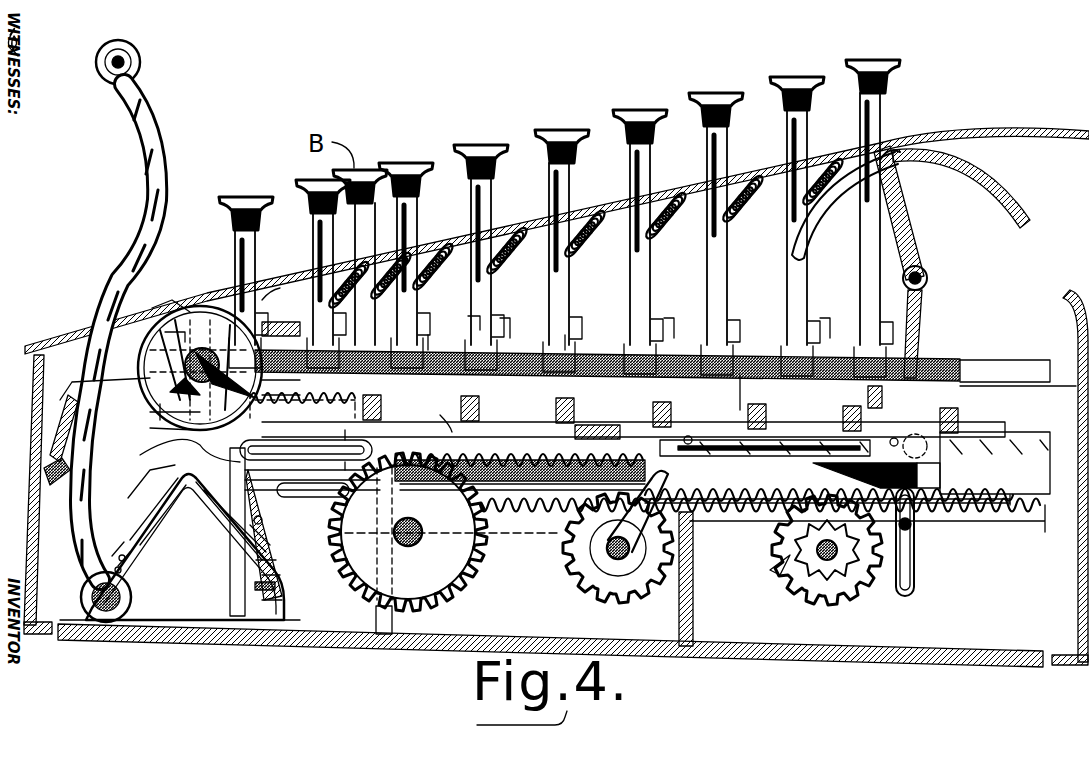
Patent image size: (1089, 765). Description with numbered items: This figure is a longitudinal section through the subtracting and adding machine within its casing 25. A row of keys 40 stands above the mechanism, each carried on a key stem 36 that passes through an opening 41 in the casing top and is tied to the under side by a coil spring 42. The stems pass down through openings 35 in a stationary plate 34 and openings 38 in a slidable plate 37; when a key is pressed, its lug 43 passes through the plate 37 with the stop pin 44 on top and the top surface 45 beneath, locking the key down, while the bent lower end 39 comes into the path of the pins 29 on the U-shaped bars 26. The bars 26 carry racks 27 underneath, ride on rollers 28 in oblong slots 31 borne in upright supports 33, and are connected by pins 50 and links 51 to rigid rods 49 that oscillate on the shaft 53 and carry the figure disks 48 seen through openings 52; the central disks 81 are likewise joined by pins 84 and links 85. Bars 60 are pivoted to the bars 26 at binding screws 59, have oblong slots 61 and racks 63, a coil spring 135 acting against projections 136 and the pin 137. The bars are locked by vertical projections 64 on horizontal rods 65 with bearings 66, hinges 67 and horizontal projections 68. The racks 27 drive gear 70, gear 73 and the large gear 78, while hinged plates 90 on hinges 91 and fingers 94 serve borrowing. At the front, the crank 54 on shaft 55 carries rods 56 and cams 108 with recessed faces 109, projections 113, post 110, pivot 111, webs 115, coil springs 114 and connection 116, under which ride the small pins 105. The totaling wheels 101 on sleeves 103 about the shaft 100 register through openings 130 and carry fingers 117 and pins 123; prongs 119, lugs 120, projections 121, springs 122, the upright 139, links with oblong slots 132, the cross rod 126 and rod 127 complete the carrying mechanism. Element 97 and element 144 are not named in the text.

The casing 25 is at (55, 342).
The bars 26 is at (518, 425).
The racks 27 is at (495, 520).
The rollers 28 is at (700, 436).
The pins 29 is at (472, 398).
The oblong slots 31 is at (310, 492).
The upright supports 33 is at (395, 626).
The stationary plate 34 is at (1042, 372).
The openings 35 is at (548, 358).
The key stems 36 is at (470, 282).
The plate 37 is at (928, 368).
The openings 38 is at (700, 352).
The lower ends 39 is at (400, 372).
The keys 40 is at (318, 180).
The openings 41 is at (328, 262).
The coil springs 42 is at (428, 278).
The lugs 43 is at (430, 342).
The stop pins 44 is at (468, 320).
The top surface 45 is at (492, 330).
The disks 48 is at (816, 240).
The rigid rods 49 is at (922, 264).
The pins 50 is at (917, 434).
The links 51 is at (912, 530).
The openings 52 is at (888, 150).
The shaft 53 is at (928, 278).
The crank 54 is at (146, 206).
The shaft 55 is at (80, 593).
The rods 56 is at (140, 452).
The binding screws 59 is at (583, 428).
The bars 60 is at (432, 414).
The oblong slots 61 is at (332, 456).
The racks 63 is at (342, 400).
The vertical projections 64 is at (740, 396).
The horizontal rods 65 is at (672, 380).
The bearings 66 is at (522, 376).
The hinges 67 is at (515, 378).
The horizontal projections 68 is at (620, 380).
The gear 70 is at (592, 582).
The gear 73 is at (640, 588).
The large gear 78 is at (486, 556).
The disks 81 is at (975, 172).
The pins 84 is at (916, 560).
The links 85 is at (916, 582).
The plates 90 is at (946, 474).
The hinges 91 is at (686, 432).
The fingers 94 is at (698, 553).
The link 97 is at (72, 382).
The shaft 100 is at (262, 380).
The wheels 101 is at (172, 302).
The sleeves 103 is at (175, 388).
The small pins 105 is at (202, 495).
The cams 108 is at (170, 520).
The recessed faces 109 is at (282, 575).
The post 110 is at (270, 533).
The pivot 111 is at (266, 520).
The projections 113 is at (284, 616).
The coil springs 114 is at (278, 588).
The webs 115 is at (280, 556).
The connection point 116 is at (284, 604).
The fingers 117 is at (302, 400).
The prongs 119 is at (148, 412).
The lugs 120 is at (312, 448).
The projections 121 is at (170, 485).
The springs 122 is at (148, 428).
The pins 123 is at (262, 330).
The cross rod 126 is at (52, 470).
The rod 127 is at (70, 445).
The openings 130 is at (176, 306).
The oblong slots 132 is at (162, 330).
The coil spring 135 is at (600, 426).
The projections 136 is at (618, 428).
The pin 137 is at (165, 505).
The upright 139 is at (238, 456).
The pin 144 is at (890, 396).